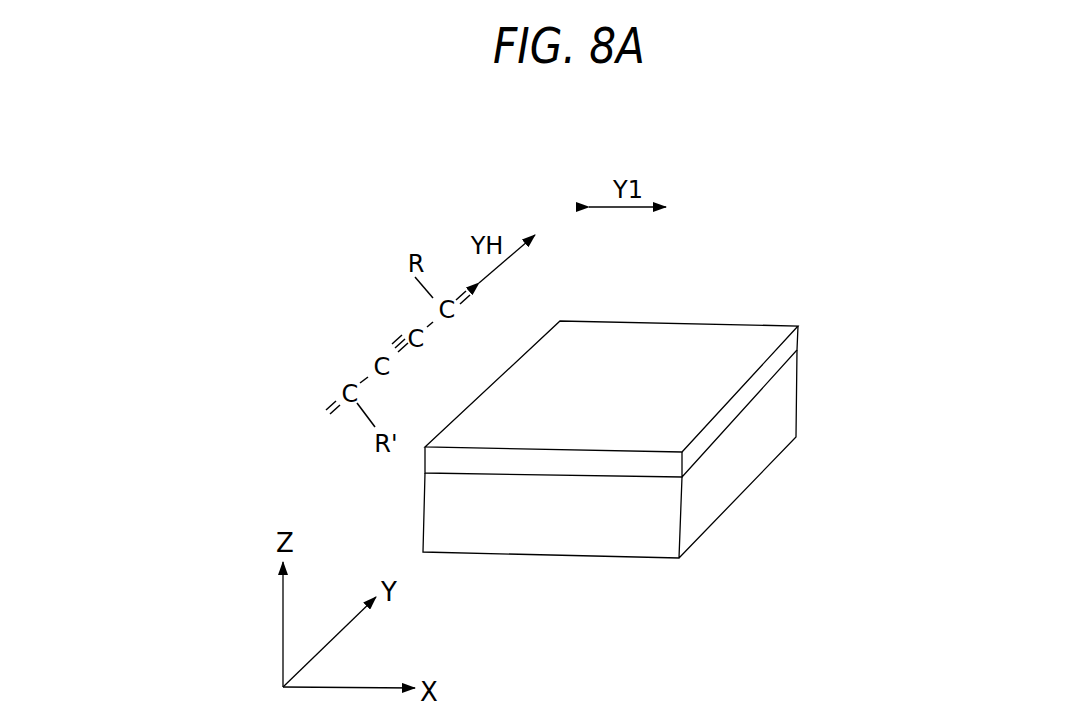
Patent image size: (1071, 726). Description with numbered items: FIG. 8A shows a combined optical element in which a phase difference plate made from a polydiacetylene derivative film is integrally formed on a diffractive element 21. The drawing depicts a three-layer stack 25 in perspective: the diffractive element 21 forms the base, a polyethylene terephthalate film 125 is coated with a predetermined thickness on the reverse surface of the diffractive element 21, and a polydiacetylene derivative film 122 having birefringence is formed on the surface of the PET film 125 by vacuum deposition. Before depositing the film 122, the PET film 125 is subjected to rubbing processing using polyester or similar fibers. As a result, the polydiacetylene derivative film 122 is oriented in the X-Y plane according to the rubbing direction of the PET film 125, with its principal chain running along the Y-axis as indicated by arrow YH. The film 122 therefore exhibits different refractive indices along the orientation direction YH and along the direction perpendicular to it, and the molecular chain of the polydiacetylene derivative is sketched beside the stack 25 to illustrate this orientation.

The polydiacetylene derivative film 122 is at (693, 345).
The polyethylene terephthalate film 125 is at (788, 353).
The diffractive element 21 is at (797, 400).
The laminated structure 25 is at (700, 407).